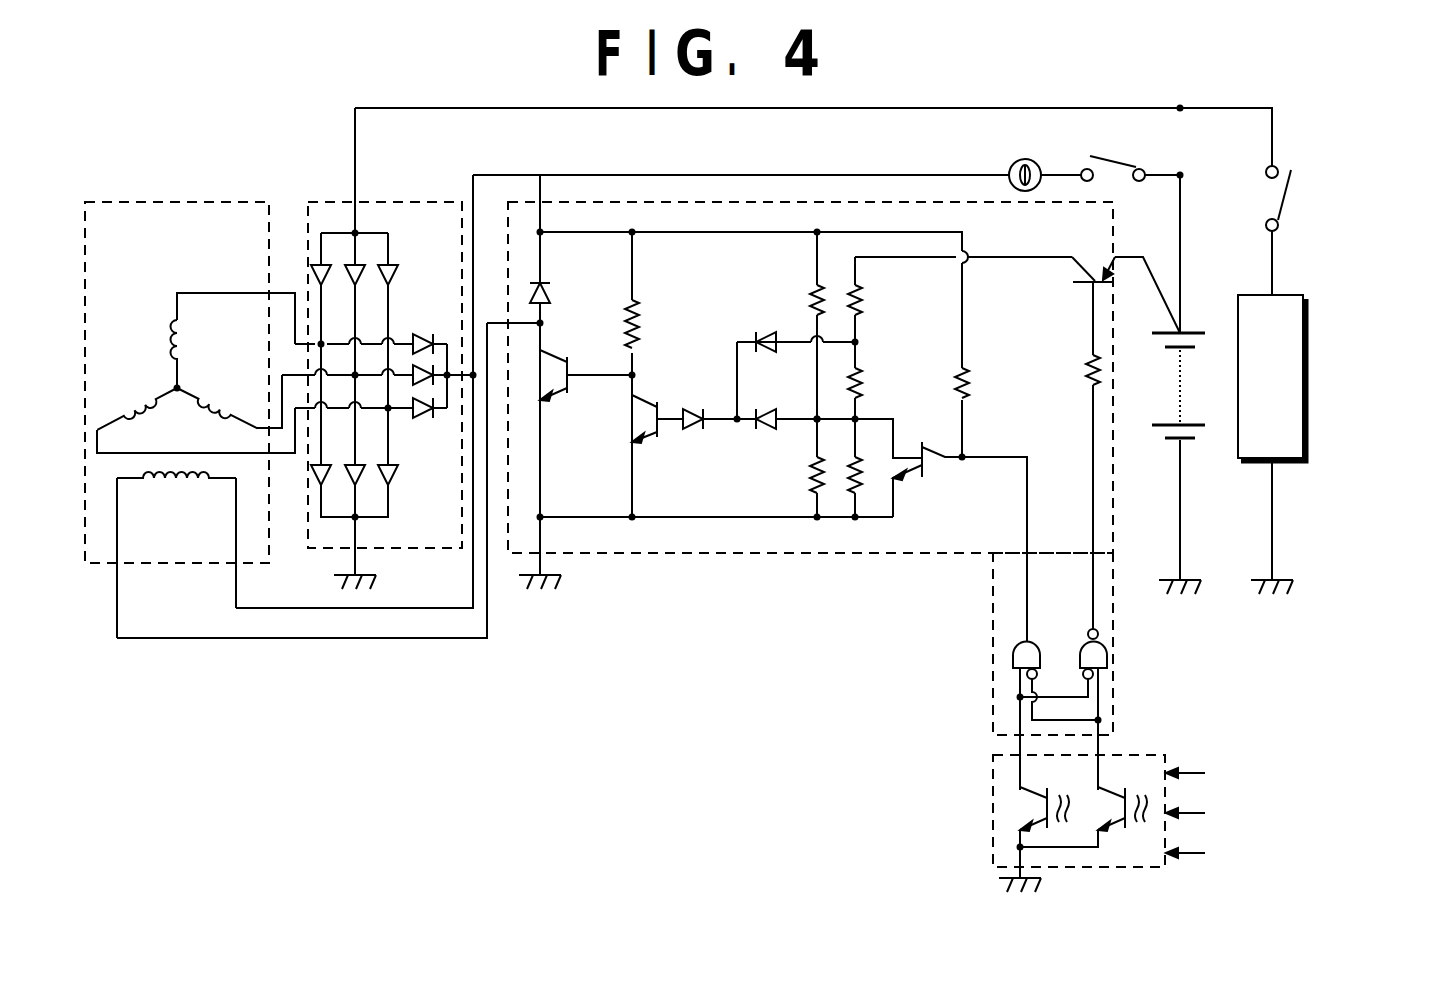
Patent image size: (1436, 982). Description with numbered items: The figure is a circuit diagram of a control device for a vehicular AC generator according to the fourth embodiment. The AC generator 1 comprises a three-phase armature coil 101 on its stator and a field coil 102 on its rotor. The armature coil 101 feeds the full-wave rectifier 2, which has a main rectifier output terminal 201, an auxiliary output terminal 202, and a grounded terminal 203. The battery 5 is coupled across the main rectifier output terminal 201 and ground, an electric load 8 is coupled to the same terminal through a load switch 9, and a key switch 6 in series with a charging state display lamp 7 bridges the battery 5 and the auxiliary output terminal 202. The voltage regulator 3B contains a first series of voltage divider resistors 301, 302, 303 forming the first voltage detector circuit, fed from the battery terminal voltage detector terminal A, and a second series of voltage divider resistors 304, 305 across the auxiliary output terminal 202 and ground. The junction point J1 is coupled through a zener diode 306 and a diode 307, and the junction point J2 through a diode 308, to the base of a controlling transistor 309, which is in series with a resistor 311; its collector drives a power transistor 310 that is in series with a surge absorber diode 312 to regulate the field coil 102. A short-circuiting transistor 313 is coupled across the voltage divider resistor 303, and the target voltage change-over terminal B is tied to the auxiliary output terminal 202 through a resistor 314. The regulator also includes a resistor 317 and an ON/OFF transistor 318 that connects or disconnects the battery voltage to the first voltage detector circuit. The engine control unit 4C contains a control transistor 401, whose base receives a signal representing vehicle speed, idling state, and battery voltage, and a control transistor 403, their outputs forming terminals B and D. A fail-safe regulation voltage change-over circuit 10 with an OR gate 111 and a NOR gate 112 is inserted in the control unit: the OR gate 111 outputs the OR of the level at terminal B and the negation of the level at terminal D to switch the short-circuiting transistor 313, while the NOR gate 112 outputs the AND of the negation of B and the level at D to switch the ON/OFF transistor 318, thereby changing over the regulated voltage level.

The AC generator 1 is at (182, 202).
The three-phase armature coil 101 is at (172, 330).
The field coil 102 is at (172, 483).
The full-wave rectifier 2 is at (392, 202).
The main rectifier output terminal 201 is at (357, 233).
The auxiliary output terminal 202 is at (447, 398).
The grounded terminal 203 is at (357, 518).
The voltage regulator 3B is at (680, 554).
The voltage divider resistor 301 is at (862, 300).
The voltage divider resistor 302 is at (865, 385).
The voltage divider resistor 303 is at (862, 460).
The voltage divider resistor 304 is at (810, 300).
The voltage divider resistor 305 is at (810, 480).
The zener diode 306 is at (693, 409).
The diode 307 is at (758, 338).
The diode 308 is at (775, 390).
The controlling transistor 309 is at (655, 442).
The power transistor 310 is at (560, 398).
The resistor 311 is at (641, 320).
The surge absorber diode 312 is at (549, 294).
The short-circuiting transistor 313 is at (908, 472).
The resistor 314 is at (970, 385).
The resistor 317 is at (1085, 365).
The ON/OFF transistor 318 is at (1090, 270).
The junction point J1 is at (858, 340).
The junction point J2 is at (812, 425).
The battery terminal voltage detector terminal A is at (1146, 257).
The target voltage change-over terminal B is at (1020, 745).
The target voltage change-over terminal D is at (1100, 745).
The battery 5 is at (1172, 370).
The key switch 6 is at (1120, 160).
The charging state display lamp 7 is at (1015, 162).
The electric load 8 is at (1305, 383).
The load switch 9 is at (1290, 198).
The fail-safe regulation voltage change-over circuit 10 is at (1113, 702).
The OR gate 111 is at (1013, 655).
The NOR gate 112 is at (1107, 648).
The engine control unit 4C is at (1102, 868).
The control transistor 401 is at (1032, 810).
The control transistor 403 is at (1130, 786).